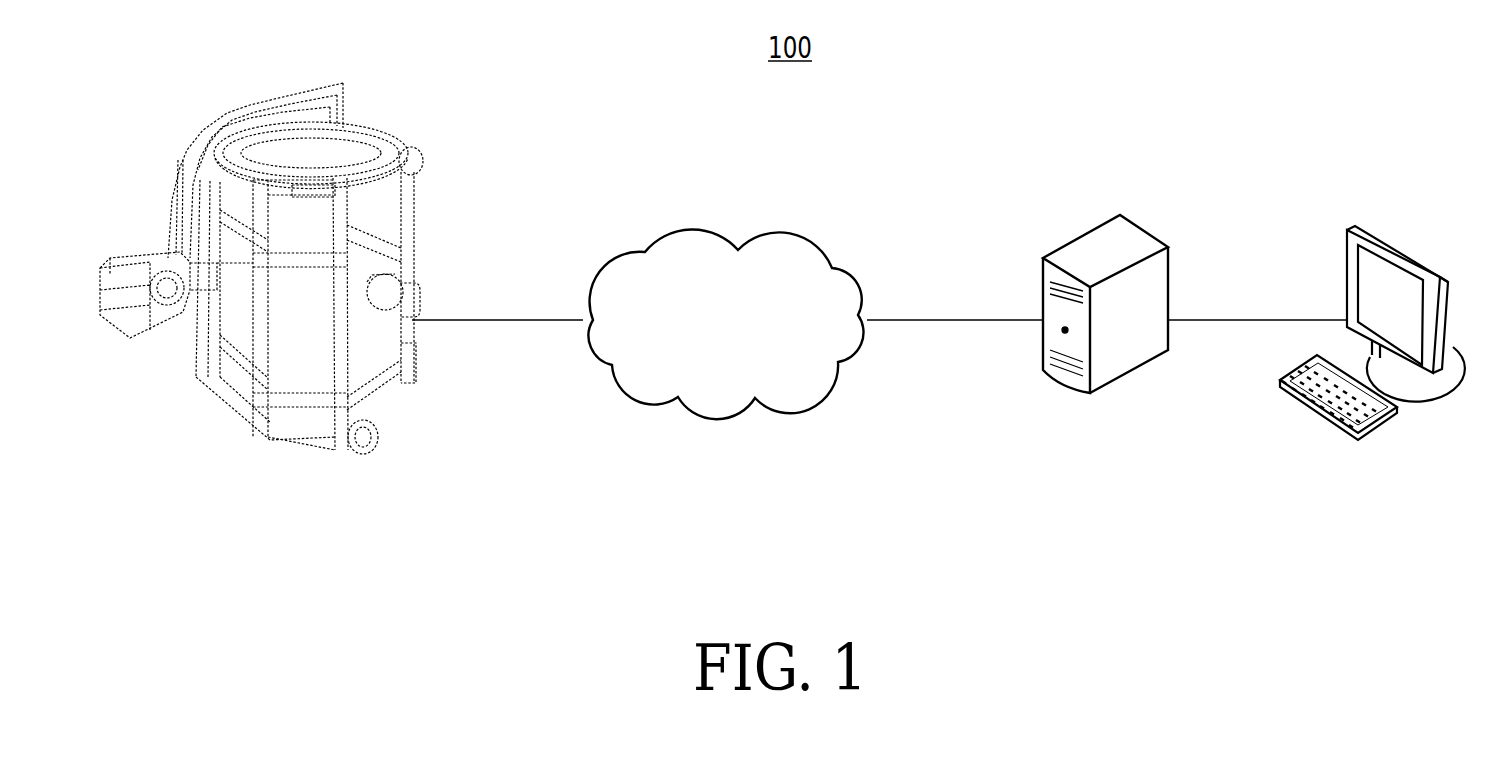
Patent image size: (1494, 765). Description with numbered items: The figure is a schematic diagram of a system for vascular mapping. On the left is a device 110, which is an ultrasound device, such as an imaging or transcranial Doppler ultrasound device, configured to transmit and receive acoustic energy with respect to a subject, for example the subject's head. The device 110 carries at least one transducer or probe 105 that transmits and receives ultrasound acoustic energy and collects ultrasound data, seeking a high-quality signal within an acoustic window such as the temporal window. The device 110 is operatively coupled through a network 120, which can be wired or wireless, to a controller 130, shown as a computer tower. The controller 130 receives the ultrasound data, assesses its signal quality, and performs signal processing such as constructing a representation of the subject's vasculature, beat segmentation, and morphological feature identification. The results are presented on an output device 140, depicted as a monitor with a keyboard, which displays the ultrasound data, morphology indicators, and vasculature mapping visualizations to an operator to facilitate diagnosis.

The probe 105 is at (403, 297).
The device 110 is at (342, 147).
The network 120 is at (726, 324).
The controller 130 is at (1140, 222).
The output device 140 is at (1410, 247).